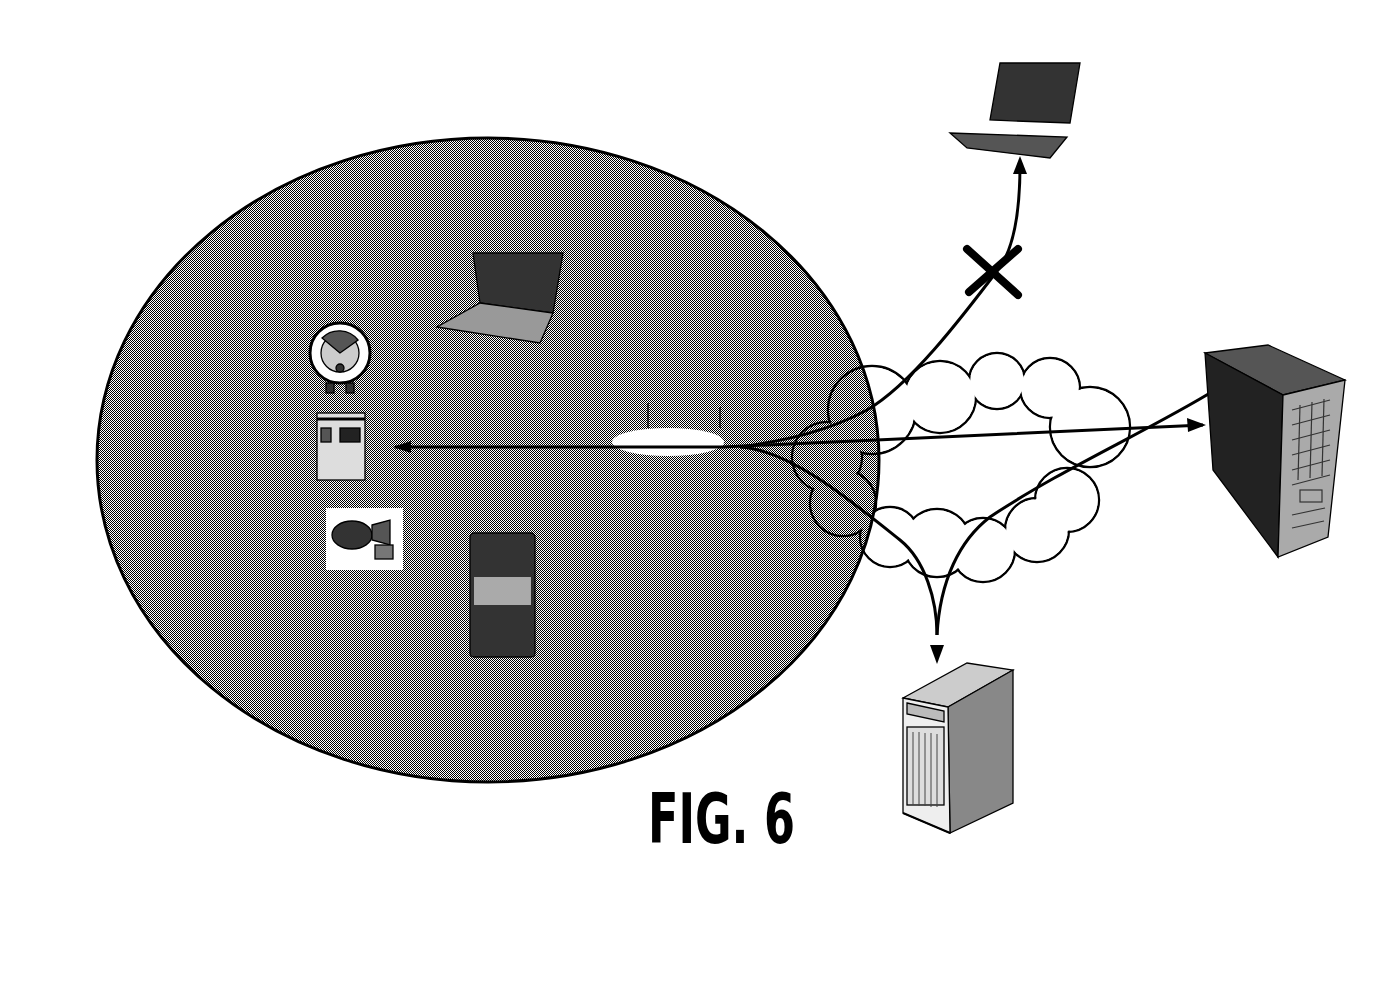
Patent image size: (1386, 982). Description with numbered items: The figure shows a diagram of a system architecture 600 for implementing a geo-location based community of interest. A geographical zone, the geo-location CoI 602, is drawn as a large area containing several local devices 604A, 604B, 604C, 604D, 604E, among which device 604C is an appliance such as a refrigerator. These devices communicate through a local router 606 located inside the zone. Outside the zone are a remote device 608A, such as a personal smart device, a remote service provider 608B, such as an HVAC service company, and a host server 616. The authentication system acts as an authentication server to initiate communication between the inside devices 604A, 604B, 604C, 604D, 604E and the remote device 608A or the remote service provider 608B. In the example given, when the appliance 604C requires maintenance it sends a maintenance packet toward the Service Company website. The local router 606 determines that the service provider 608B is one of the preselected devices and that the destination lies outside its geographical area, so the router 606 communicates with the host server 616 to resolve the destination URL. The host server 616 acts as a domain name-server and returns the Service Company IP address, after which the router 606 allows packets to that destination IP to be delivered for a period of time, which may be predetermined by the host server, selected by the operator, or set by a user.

The system architecture 600 is at (716, 135).
The geo-location CoI 602 is at (197, 238).
The device 604A is at (477, 278).
The device 604B is at (297, 360).
The appliance 604C is at (310, 452).
The device 604D is at (316, 541).
The device 604E is at (467, 610).
The local router 606 is at (673, 423).
The remote device 608A is at (1080, 104).
The remote service provider 608B is at (1280, 347).
The host server 616 is at (1017, 748).